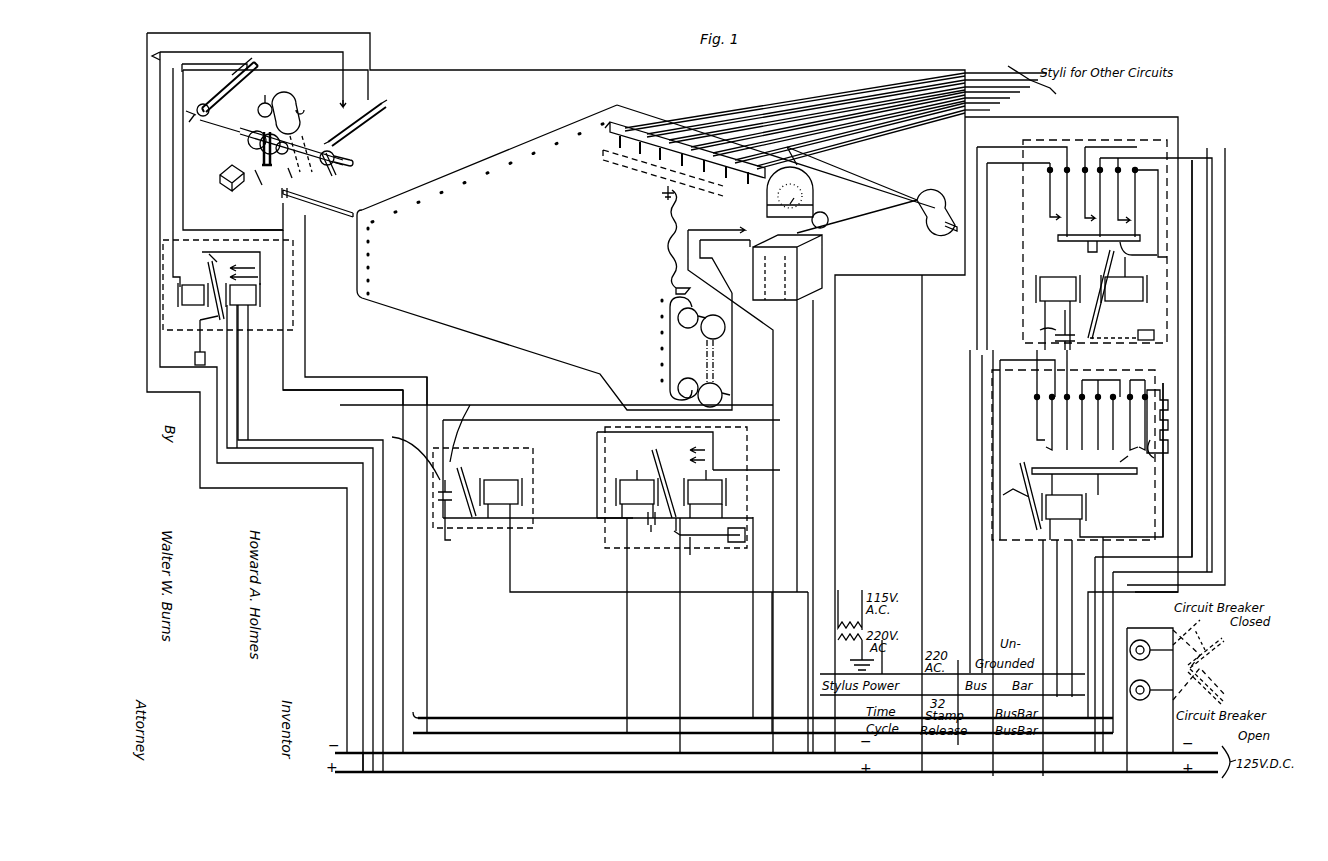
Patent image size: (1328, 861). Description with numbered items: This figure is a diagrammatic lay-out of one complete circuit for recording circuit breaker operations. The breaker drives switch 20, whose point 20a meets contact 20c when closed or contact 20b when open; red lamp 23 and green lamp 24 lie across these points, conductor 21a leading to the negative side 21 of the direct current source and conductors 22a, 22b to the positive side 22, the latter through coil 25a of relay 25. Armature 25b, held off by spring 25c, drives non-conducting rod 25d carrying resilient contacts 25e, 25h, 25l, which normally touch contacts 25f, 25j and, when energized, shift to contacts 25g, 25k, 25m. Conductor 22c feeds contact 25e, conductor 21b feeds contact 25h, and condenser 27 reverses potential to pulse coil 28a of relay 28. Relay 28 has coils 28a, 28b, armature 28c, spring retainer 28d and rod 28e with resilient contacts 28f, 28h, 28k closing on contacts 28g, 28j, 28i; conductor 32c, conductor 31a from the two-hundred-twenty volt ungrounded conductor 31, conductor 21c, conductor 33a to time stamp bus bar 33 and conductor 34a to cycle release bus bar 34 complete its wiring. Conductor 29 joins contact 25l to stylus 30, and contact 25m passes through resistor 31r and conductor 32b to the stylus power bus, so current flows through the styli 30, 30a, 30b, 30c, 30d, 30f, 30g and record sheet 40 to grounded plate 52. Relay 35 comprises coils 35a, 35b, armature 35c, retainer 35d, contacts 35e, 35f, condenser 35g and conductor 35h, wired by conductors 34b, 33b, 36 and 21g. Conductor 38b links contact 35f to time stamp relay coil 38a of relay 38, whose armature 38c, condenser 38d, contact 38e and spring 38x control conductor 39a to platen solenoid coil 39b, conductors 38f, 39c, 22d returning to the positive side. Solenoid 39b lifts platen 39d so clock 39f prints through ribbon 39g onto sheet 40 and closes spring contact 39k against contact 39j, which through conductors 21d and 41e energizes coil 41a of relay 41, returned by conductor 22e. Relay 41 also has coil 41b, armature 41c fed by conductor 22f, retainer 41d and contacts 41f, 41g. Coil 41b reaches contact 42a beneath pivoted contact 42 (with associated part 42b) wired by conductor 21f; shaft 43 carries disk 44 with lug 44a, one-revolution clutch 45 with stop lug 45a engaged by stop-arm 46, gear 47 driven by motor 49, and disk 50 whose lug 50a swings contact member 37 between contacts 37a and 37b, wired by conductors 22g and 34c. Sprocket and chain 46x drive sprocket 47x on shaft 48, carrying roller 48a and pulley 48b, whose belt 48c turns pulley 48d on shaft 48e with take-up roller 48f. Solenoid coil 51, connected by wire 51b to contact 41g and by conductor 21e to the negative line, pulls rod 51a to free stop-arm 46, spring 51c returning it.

The switch 20 is at (1232, 672).
The switch point 20a is at (1190, 664).
The contact point 20b is at (1176, 736).
The contact point 20c is at (1172, 600).
The negative side of direct current source 21 is at (538, 757).
The conductor 21a is at (1196, 742).
The conductor 21b is at (922, 470).
The conductor 21c is at (1226, 328).
The conductor 21d is at (772, 674).
The conductor 21e is at (403, 590).
The conductor 21f is at (190, 395).
The conductor 21g is at (680, 652).
The positive side of direct current source 22 is at (494, 776).
The conductor 22a is at (1127, 738).
The conductor 22b is at (1043, 602).
The conductor 22c is at (993, 580).
The conductor 22d is at (808, 644).
The conductor 22e is at (383, 678).
The conductor 22f is at (383, 650).
The conductor 22g is at (276, 441).
The red signal lamp 23 is at (1142, 700).
The green signal lamp 24 is at (1144, 640).
The relay 25 is at (1128, 472).
The relay coil 25a is at (1072, 508).
The armature 25b is at (1034, 472).
The spring 25c is at (1024, 512).
The non-conducting operating rod 25d is at (1105, 476).
The resilient contact member 25e is at (1047, 452).
The contact member 25f is at (1057, 450).
The contact member 25g is at (1049, 438).
The resilient contact member 25h is at (1092, 468).
The contact member 25j is at (1100, 448).
The contact member 25k is at (1112, 448).
The resilient contact member 25l is at (1127, 460).
The contact member 25m is at (1148, 450).
The condenser 27 is at (1040, 324).
The relay 28 is at (1252, 301).
The electro-magnetic coil 28a is at (1038, 294).
The electro-magnetic coil 28b is at (1128, 296).
The armature 28c is at (1096, 264).
The spring retainer 28d is at (1136, 328).
The non-conducting operating rod 28e is at (1125, 245).
The resilient contact member 28f is at (1058, 236).
The contact member 28g is at (1050, 206).
The resilient contact member 28h is at (1110, 230).
The contact member 28i is at (1120, 208).
The contact member 28j is at (1085, 203).
The resilient contact member 28k is at (1140, 215).
The conductor 29 is at (1164, 114).
The stylus 30 is at (852, 158).
The stylus 30a is at (834, 150).
The stylus 30b is at (812, 141).
The stylus 30c is at (790, 132).
The stylus 30d is at (768, 122).
The stylus 30f is at (724, 102).
The stylus 30g is at (744, 112).
The ungrounded alternating current conductor 31 is at (912, 668).
The conductor 31a is at (970, 405).
The resistor 31r is at (1170, 415).
The conductor 32b is at (1165, 505).
The conductor 32c is at (982, 545).
The time stamp bus bar 33 is at (504, 721).
The conductor 33a is at (1226, 256).
The conductor 33b is at (753, 604).
The cycle release bus bar 34 is at (584, 737).
The conductor 34a is at (1194, 532).
The conductor 34b is at (627, 662).
The conductor 34c is at (427, 688).
The relay 35 is at (660, 550).
The operating coil 35a is at (630, 495).
The operating coil 35b is at (724, 490).
The armature 35c is at (652, 455).
The resilient retaining member 35d is at (700, 552).
The contact member 35e is at (706, 450).
The contact member 35f is at (706, 460).
The condenser 35g is at (780, 470).
The conductor 35h is at (597, 440).
The conductor 36 is at (622, 70).
The pivoted contact member 37 is at (240, 80).
The contacting member 37a is at (242, 88).
The contact member 37b is at (220, 76).
The time stamp relay 38 is at (480, 448).
The time stamp relay coil 38a is at (496, 482).
The conductor 38b is at (566, 508).
The relay armature 38c is at (464, 524).
The condenser 38d is at (452, 548).
The contact member 38e is at (476, 398).
The conductor 38f is at (578, 592).
The spring 38x is at (392, 437).
The conductor 39a is at (570, 404).
The platen solenoid coil 39b is at (826, 264).
The conductor 39c is at (815, 380).
The platen 39d is at (822, 222).
The time recording stamp clock 39f is at (812, 194).
The printing ribbon 39g is at (760, 180).
The contact member 39j is at (670, 237).
The spring contact member 39k is at (745, 242).
The record sheet 40 is at (480, 185).
The relay 41 is at (256, 326).
The relay coil 41a is at (258, 296).
The coil 41b is at (194, 300).
The armature 41c is at (215, 262).
The spring retainer 41d is at (195, 358).
The conductor 41e is at (330, 388).
The contact member 41f is at (255, 255).
The contact member 41g is at (258, 273).
The pivoted contact member 42 is at (360, 122).
The contact member 42a is at (356, 100).
The stylus bar wire 42b is at (370, 50).
The shaft 43 is at (352, 162).
The disk 44 is at (340, 148).
The lifting lug 44a is at (338, 172).
The one-revolution clutch 45 is at (245, 140).
The stop lug 45a is at (272, 152).
The swinging stop-arm 46 is at (262, 150).
The sprocket and chain 46x is at (300, 175).
The gear 47 is at (268, 106).
The sprocket 47x is at (290, 198).
The shaft 48 is at (328, 206).
The roller 48a is at (678, 310).
The pulley 48b is at (666, 330).
The drive belt 48c is at (706, 352).
The pulley 48d is at (724, 388).
The shaft 48e is at (680, 390).
The take-up roller 48f is at (660, 366).
The power motor 49 is at (292, 104).
The disk 50 is at (222, 118).
The lug 50a is at (204, 102).
The solenoid coil 51 is at (222, 190).
The rod 51a is at (256, 185).
The wire 51b is at (256, 218).
The spring 51c is at (296, 174).
The grounded plate 52 is at (658, 196).